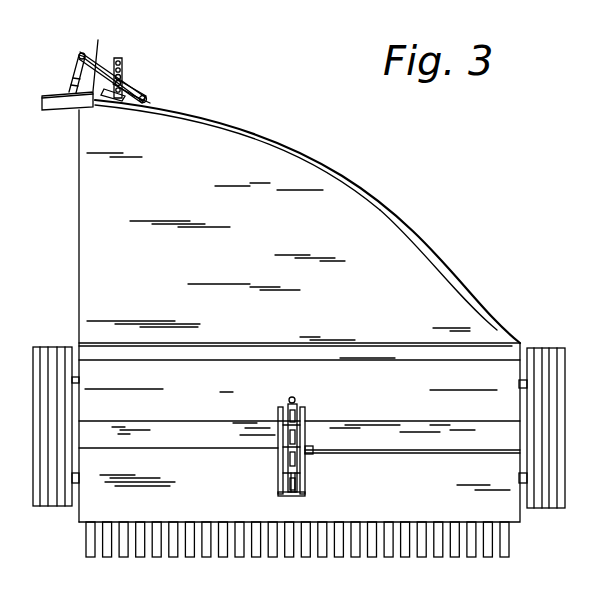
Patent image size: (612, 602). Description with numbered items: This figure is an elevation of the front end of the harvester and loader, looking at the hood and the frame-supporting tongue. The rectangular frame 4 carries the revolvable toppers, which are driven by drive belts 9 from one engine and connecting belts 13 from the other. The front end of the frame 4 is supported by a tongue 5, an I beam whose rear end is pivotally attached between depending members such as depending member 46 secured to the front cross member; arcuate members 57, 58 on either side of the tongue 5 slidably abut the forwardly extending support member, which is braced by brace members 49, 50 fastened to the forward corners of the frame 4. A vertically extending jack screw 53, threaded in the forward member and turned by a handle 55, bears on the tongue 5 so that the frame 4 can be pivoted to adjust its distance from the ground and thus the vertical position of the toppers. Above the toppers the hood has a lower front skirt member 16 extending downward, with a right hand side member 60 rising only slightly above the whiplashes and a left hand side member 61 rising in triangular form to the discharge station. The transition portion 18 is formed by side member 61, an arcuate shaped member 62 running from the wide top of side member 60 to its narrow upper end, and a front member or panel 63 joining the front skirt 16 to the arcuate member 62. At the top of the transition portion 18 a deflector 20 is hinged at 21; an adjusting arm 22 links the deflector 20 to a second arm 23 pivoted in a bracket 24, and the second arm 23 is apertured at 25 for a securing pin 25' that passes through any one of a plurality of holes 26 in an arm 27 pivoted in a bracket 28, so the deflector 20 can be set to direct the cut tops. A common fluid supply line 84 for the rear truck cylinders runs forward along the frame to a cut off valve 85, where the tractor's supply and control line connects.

The rectangular frame 4 is at (445, 432).
The tongue 5 is at (297, 492).
The drive belts 9 is at (43, 347).
The connecting belts 13 is at (550, 350).
The front skirt member 16 is at (503, 487).
The transition portion 18 is at (332, 180).
The deflector 20 is at (56, 93).
The hinge 21 is at (96, 90).
The adjusting arm 22 is at (80, 56).
The second arm 23 is at (97, 44).
The bracket 24 is at (150, 101).
The aperture 25 is at (138, 71).
The securing pin 25' is at (149, 79).
The holes 26 is at (119, 60).
The arm 27 is at (122, 75).
The bracket 28 is at (124, 92).
The depending member 46 is at (289, 496).
The brace member 49 is at (422, 426).
The brace member 50 is at (226, 418).
The jack screw 53 is at (306, 412).
The handle 55 is at (290, 398).
The arcuate member 57 is at (303, 478).
The arcuate member 58 is at (278, 476).
The right hand side member 60 is at (518, 345).
The left hand side member 61 is at (78, 205).
The arcuate shaped member 62 is at (368, 196).
The front member or panel 63 is at (263, 150).
The common fluid supply line 84 is at (440, 455).
The cut off valve 85 is at (312, 456).